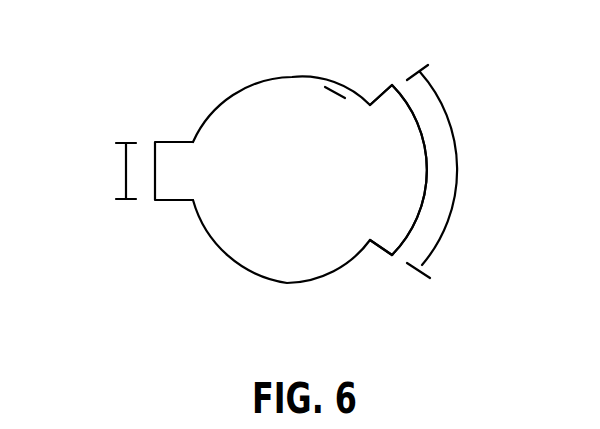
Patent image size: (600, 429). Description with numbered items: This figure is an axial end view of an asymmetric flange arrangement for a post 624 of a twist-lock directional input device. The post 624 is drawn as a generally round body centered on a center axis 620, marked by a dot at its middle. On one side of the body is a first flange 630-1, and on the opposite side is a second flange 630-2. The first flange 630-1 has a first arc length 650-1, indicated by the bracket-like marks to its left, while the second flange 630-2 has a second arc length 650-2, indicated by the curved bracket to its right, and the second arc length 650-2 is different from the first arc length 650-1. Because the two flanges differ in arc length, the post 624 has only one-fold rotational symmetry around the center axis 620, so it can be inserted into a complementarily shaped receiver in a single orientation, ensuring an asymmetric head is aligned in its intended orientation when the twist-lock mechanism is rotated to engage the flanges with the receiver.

The center axis 620 is at (288, 170).
The post 624 is at (474, 72).
The first flange 630-1 is at (173, 158).
The second flange 630-2 is at (390, 168).
The first arc length 650-1 is at (125, 183).
The second arc length 650-2 is at (442, 237).